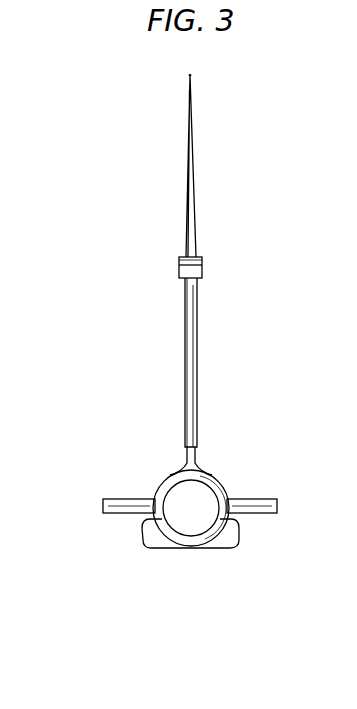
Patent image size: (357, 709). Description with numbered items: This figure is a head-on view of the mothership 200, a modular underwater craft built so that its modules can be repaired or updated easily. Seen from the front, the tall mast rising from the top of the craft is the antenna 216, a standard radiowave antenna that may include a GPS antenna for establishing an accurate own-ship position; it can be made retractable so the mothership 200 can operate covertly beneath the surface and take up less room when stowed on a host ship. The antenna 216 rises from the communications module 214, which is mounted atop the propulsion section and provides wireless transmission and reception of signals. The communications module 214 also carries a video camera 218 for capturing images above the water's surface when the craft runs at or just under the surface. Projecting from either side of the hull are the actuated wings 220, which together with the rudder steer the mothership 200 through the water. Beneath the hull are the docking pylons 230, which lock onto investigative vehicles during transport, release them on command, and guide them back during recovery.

The mothership 200 is at (124, 322).
The communications module 214 is at (197, 362).
The antenna 216 is at (198, 196).
The video camera 218 is at (203, 268).
The actuated wings 220 is at (123, 505).
The docking pylons 230 is at (145, 542).